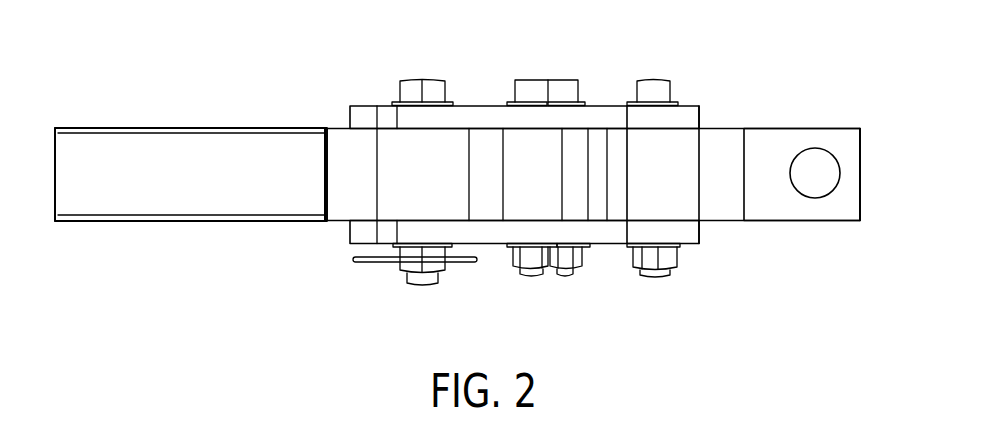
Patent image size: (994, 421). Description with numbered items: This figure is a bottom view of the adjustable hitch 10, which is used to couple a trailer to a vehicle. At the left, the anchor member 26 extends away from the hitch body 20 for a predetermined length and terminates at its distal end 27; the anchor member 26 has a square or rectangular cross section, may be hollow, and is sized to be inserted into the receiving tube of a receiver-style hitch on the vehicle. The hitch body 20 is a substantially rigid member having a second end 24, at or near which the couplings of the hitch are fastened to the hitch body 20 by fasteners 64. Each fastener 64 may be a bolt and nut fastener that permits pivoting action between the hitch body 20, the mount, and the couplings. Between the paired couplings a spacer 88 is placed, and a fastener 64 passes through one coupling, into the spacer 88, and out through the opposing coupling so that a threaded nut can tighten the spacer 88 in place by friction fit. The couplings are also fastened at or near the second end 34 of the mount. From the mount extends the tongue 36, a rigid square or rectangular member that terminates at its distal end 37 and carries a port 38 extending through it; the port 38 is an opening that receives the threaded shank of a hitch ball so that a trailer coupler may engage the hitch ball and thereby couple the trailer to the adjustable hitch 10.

The adjustable hitch 10 is at (469, 196).
The hitch body 20 is at (343, 147).
The second end 24 is at (388, 180).
The anchor member 26 is at (227, 152).
The distal end 27 is at (56, 180).
The second end 34 is at (682, 153).
The tongue 36 is at (770, 148).
The distal end 37 is at (860, 178).
The port 38 is at (817, 199).
The fastener 64 is at (413, 90).
The spacer 88 is at (575, 150).